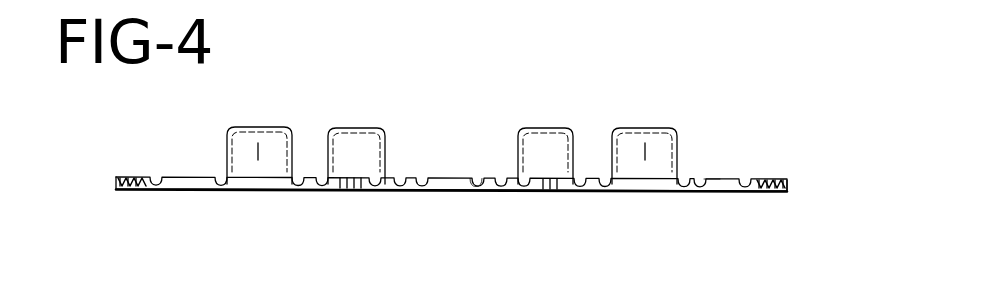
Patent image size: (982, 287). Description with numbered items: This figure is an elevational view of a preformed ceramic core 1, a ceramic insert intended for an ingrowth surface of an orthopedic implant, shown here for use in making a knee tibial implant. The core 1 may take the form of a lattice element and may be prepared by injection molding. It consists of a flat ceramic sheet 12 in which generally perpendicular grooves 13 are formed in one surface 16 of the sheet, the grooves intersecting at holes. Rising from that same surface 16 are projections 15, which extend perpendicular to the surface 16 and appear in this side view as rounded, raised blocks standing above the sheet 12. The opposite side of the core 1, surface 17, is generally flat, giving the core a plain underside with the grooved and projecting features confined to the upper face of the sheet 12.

The ceramic core 1 is at (496, 165).
The flat ceramic sheet 12 is at (788, 186).
The grooves 13 is at (475, 178).
The projections 15 is at (643, 128).
The surface 16 is at (712, 178).
The surface 17 is at (643, 192).